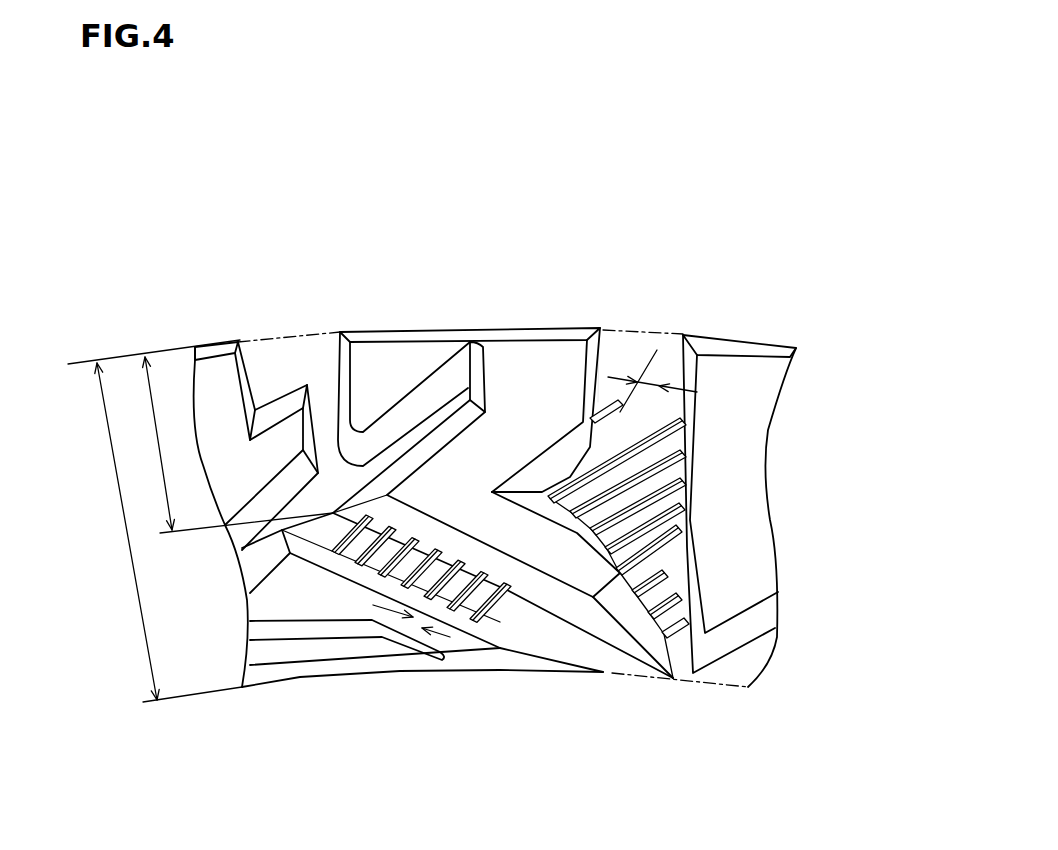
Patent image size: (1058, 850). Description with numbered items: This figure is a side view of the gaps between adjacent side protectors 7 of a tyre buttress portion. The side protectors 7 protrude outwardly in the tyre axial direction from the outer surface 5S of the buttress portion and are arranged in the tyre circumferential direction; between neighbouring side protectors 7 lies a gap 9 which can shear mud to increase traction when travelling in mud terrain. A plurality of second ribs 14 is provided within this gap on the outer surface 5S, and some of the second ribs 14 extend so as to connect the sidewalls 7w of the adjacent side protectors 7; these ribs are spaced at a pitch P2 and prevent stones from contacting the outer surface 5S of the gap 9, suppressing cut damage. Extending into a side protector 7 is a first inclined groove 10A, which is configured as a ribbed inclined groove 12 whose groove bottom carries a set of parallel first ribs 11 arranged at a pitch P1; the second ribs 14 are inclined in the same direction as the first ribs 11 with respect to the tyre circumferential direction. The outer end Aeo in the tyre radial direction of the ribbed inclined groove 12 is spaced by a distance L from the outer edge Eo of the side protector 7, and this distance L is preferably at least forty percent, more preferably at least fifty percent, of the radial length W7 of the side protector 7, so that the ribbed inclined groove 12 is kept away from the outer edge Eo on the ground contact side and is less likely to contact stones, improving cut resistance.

The outer edge Eo is at (169, 347).
The outer end Aeo is at (327, 508).
The side protector 7 is at (543, 318).
The sidewall 7w is at (594, 377).
The gap 9 is at (620, 353).
The outer surface 5S is at (650, 353).
The pitch P2 is at (647, 403).
The second rib 14 is at (670, 457).
The distance L is at (230, 445).
The length W7 is at (157, 532).
The pitch P1 is at (405, 612).
The first rib 11 is at (463, 592).
The first inclined groove 10A is at (567, 637).
The ribbed inclined groove 12 is at (438, 643).